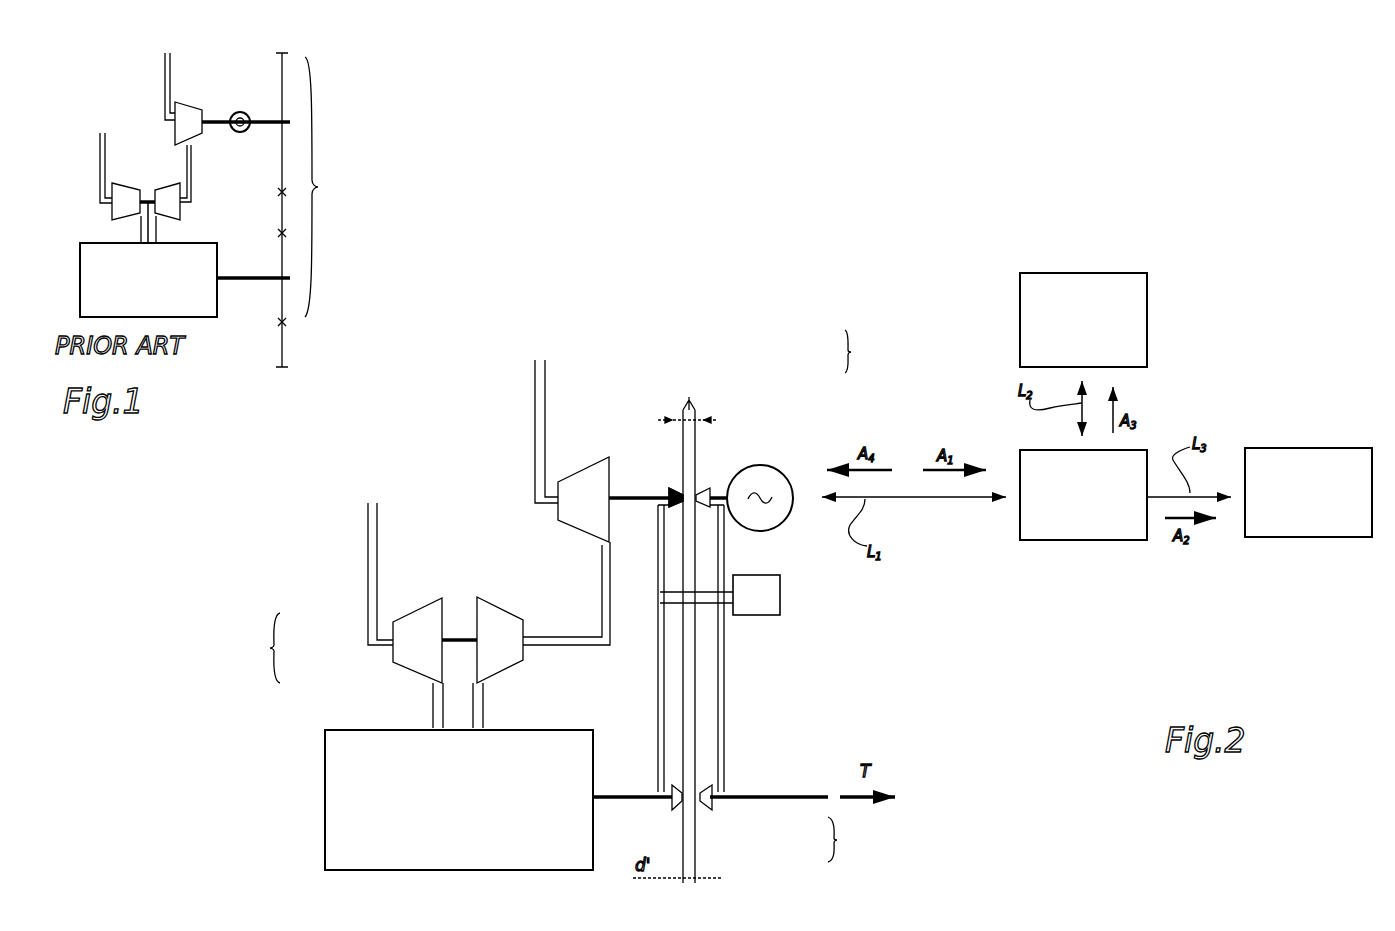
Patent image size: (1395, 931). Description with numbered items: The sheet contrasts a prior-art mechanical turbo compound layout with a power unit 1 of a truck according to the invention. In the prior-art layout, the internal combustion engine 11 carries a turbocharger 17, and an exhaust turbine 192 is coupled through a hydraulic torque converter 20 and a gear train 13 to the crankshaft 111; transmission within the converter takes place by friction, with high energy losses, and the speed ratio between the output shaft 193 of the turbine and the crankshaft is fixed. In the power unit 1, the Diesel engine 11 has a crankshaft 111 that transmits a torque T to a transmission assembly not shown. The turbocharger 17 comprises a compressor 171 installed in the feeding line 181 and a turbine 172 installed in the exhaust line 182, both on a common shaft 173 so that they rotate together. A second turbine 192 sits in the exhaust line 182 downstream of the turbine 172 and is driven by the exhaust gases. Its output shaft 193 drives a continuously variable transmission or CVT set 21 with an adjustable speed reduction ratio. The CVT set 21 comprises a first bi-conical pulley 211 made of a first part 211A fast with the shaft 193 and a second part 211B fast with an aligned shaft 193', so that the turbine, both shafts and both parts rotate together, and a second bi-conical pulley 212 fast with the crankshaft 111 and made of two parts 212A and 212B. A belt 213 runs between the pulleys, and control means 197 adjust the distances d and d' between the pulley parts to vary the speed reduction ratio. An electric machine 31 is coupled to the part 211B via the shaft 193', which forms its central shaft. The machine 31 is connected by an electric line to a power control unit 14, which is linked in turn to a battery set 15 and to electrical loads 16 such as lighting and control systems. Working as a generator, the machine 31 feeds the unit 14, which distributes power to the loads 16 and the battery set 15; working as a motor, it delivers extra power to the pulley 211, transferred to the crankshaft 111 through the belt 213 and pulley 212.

In FIG. 2, the power unit 1 is at (437, 483).
In FIG. 1, the internal combustion engine 11 is at (148, 280).
In FIG. 2, the internal combustion engine 11 is at (459, 800).
In FIG. 1, the crankshaft 111 is at (247, 277).
In FIG. 2, the crankshaft 111 is at (655, 795).
In FIG. 1, the gear train 13 is at (310, 210).
In FIG. 2, the power control unit 14 is at (1083, 495).
In FIG. 2, the battery set 15 is at (1083, 320).
In FIG. 2, the electrical loads 16 is at (1308, 492).
In FIG. 1, the turbocharger 17 is at (177, 171).
In FIG. 2, the turbocharger 17 is at (383, 647).
In FIG. 2, the compressor 171 is at (417, 657).
In FIG. 2, the turbine 172 is at (498, 620).
In FIG. 2, the common shaft 173 is at (440, 683).
In FIG. 2, the feeding line 181 is at (367, 543).
In FIG. 2, the exhaust line 182 is at (602, 582).
In FIG. 1, the second turbine 192 is at (192, 106).
In FIG. 2, the second turbine 192 is at (590, 482).
In FIG. 2, the output shaft 193 is at (639, 530).
In FIG. 2, the shaft 193' is at (753, 459).
In FIG. 2, the control means 197 is at (777, 602).
In FIG. 1, the hydraulic torque converter 20 is at (237, 110).
In FIG. 2, the CVT set 21 is at (737, 730).
In FIG. 2, the first bi-conical pulley 211 is at (771, 418).
In FIG. 2, the first part 211A is at (675, 487).
In FIG. 2, the second part 211B is at (702, 487).
In FIG. 2, the second bi-conical pulley 212 is at (773, 824).
In FIG. 2, the first part 212A is at (677, 812).
In FIG. 2, the second part 212B is at (705, 812).
In FIG. 2, the belt 213 is at (697, 663).
In FIG. 2, the electric machine 31 is at (767, 523).